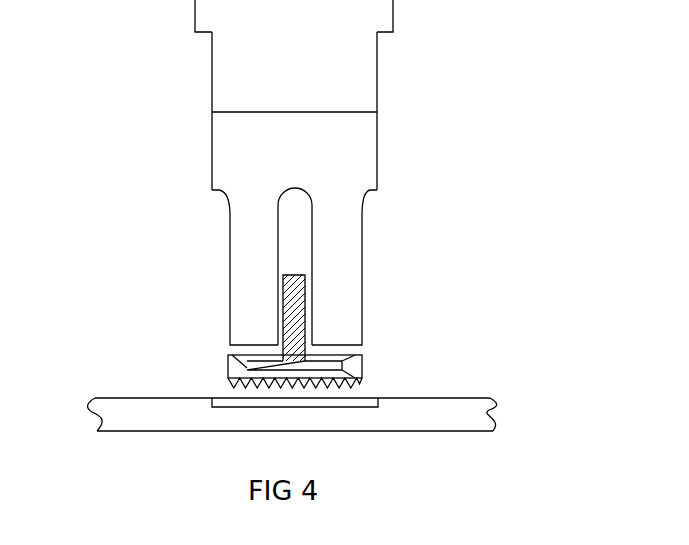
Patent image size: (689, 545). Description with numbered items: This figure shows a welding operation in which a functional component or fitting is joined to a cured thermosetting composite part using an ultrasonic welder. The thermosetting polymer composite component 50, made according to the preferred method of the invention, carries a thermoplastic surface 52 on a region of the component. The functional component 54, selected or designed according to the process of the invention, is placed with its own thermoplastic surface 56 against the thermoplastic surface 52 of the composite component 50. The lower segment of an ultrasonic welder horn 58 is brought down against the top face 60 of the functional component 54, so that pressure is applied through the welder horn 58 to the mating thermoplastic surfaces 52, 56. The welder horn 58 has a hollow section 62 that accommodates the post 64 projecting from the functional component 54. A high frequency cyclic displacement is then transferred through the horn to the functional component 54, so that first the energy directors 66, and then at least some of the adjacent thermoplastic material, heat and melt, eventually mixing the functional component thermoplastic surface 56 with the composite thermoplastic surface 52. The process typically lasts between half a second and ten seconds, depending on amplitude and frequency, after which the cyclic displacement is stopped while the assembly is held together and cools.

The thermosetting polymer composite component 50 is at (197, 412).
The thermoplastic surface 52 is at (287, 370).
The functional component 54 is at (432, 372).
The thermoplastic surface 56 is at (295, 398).
The ultrasonic welder horn 58 is at (402, 163).
The top face 60 is at (412, 355).
The hollow section 62 is at (368, 243).
The post 64 is at (365, 305).
The energy directors 66 is at (417, 388).